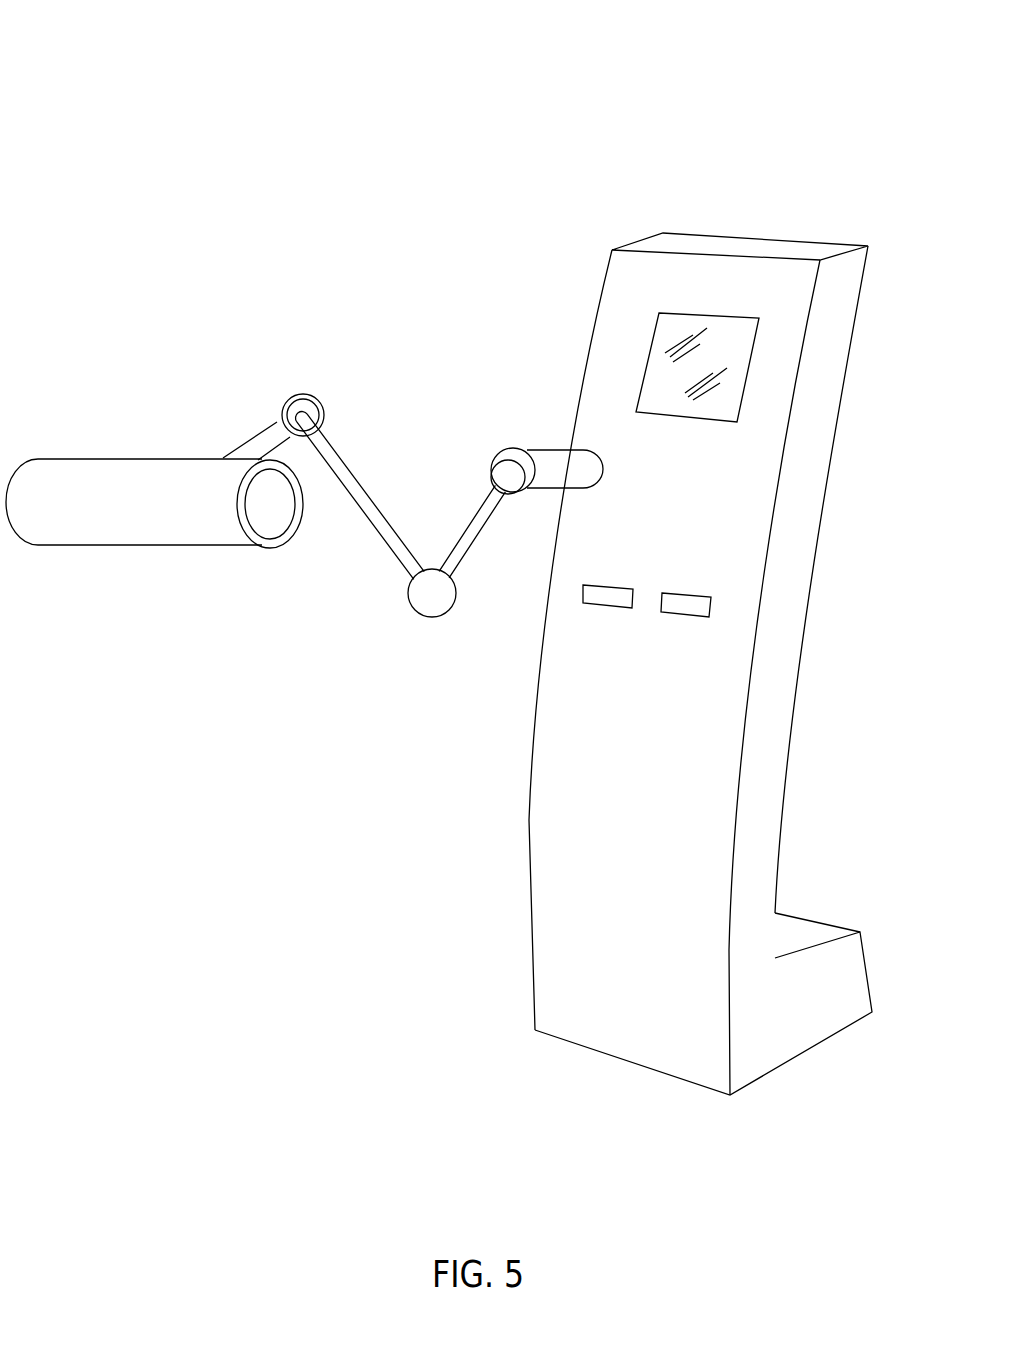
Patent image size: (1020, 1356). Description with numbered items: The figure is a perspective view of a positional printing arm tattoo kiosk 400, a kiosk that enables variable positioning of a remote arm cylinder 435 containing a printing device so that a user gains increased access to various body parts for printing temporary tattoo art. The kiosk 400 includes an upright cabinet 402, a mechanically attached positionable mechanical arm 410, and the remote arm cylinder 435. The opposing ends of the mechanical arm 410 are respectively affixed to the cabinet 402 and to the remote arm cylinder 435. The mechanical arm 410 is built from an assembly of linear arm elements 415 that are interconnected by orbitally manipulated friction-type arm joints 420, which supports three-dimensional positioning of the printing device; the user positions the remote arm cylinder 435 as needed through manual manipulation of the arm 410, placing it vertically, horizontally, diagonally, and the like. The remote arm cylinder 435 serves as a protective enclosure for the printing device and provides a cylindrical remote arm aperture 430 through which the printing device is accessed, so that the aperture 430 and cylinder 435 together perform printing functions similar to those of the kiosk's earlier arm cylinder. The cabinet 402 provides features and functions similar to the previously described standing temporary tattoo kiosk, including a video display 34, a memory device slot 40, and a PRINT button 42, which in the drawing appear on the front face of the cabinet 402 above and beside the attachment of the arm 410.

The positional printing arm tattoo kiosk 400 is at (168, 175).
The upright cabinet 402 is at (730, 252).
The video display 34 is at (750, 368).
The memory device slot 40 is at (711, 597).
The PRINT button 42 is at (607, 598).
The mechanical arm 410 is at (353, 470).
The linear arm elements 415 is at (270, 442).
The arm joints 420 is at (305, 410).
The remote arm aperture 430 is at (250, 540).
The remote arm cylinder 435 is at (123, 515).